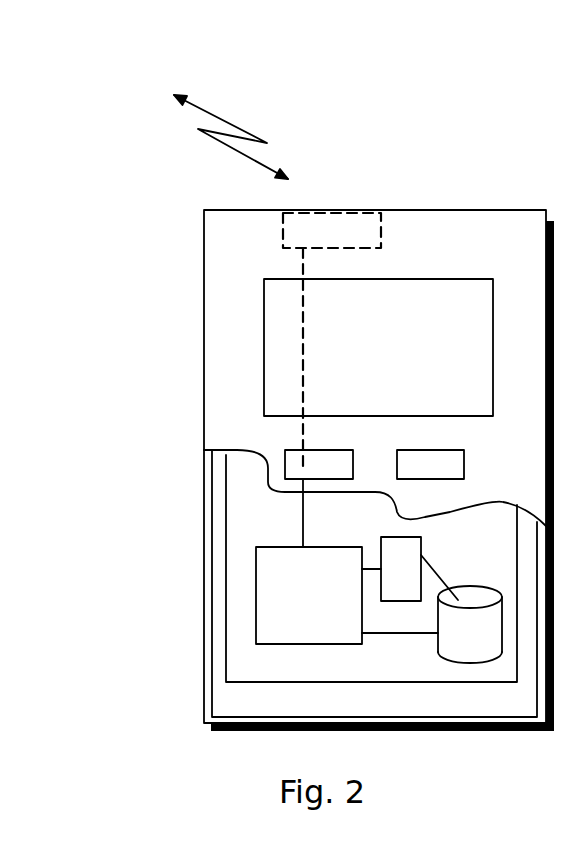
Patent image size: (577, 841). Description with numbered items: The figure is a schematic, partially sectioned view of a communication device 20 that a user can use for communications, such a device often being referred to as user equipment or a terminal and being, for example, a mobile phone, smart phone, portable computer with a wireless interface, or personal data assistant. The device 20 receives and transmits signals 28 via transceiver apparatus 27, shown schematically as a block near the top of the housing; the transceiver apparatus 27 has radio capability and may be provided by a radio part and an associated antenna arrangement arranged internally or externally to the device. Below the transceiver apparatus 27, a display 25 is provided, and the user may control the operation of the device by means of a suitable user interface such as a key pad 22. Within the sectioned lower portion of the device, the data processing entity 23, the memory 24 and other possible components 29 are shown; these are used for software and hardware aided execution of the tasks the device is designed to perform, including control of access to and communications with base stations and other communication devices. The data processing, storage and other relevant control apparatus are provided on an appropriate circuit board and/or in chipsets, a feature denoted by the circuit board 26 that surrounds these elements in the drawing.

The communication device 20 is at (203, 268).
The key pad 22 is at (293, 463).
The data processing entity 23 is at (265, 570).
The memory 24 is at (462, 633).
The display 25 is at (282, 333).
The circuit board 26 is at (253, 662).
The transceiver apparatus 27 is at (313, 228).
The signals 28 is at (200, 110).
The other components 29 is at (400, 552).